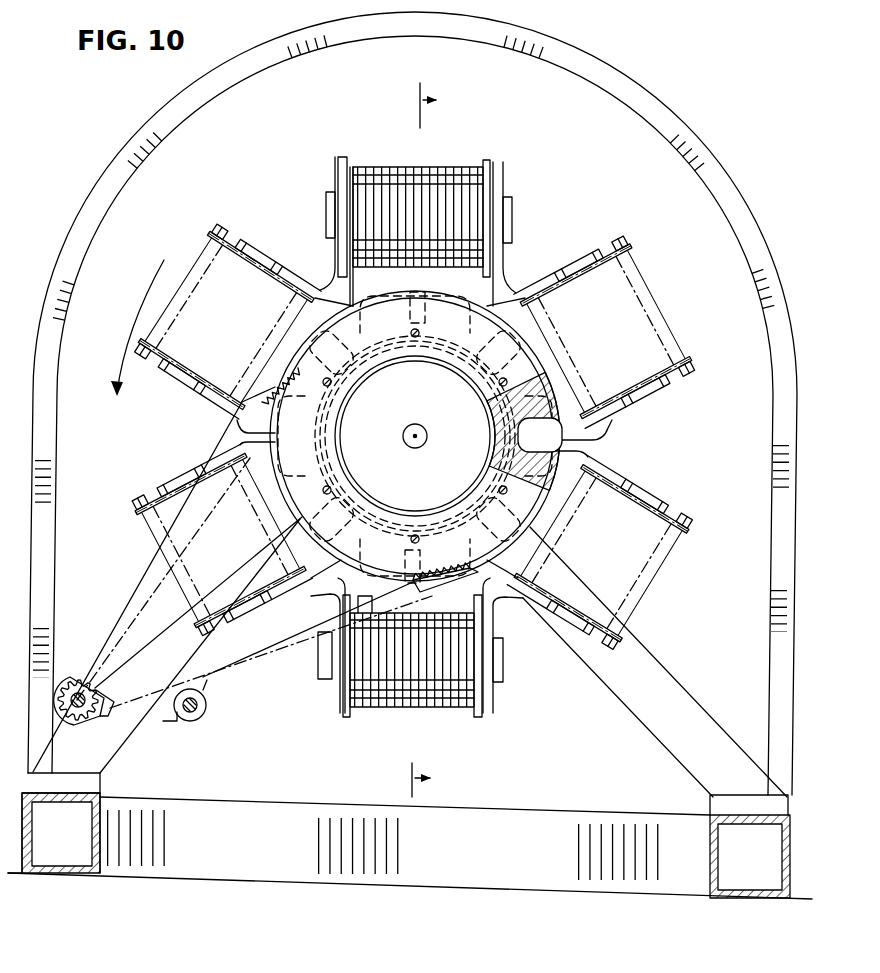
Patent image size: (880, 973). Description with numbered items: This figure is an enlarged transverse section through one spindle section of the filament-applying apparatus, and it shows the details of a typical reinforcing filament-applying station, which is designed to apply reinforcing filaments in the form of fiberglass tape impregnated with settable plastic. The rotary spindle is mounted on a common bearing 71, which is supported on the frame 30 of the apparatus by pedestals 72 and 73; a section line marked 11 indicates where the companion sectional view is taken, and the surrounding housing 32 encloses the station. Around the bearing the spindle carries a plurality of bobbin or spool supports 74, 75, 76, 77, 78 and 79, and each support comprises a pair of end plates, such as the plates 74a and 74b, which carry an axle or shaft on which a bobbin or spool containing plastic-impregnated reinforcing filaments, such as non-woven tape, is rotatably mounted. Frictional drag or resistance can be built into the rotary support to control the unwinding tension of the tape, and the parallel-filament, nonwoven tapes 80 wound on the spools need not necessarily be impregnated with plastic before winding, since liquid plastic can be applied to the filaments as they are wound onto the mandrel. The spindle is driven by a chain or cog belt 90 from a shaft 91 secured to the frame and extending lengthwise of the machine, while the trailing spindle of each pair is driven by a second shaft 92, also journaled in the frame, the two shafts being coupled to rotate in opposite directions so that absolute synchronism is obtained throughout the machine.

The frame 30 is at (267, 866).
The arched housing 32 is at (637, 84).
The common bearing 71 is at (492, 434).
The pedestal 72 is at (123, 737).
The pedestal 73 is at (483, 160).
The bobbin or spool support 74 is at (425, 218).
The end plate 74a is at (338, 167).
The end plate 74b is at (505, 180).
The bobbin or spool support 75 is at (622, 229).
The bobbin or spool support 76 is at (697, 520).
The bobbin or spool support 77 is at (500, 722).
The bobbin or spool support 78 is at (134, 496).
The bobbin or spool support 79 is at (220, 224).
The parallel-filament nonwoven tape 80 is at (450, 268).
The chain or cog belt 90 is at (127, 590).
The shaft 91 is at (86, 696).
The shaft 92 is at (206, 708).
The section line 11- 11 is at (429, 443).